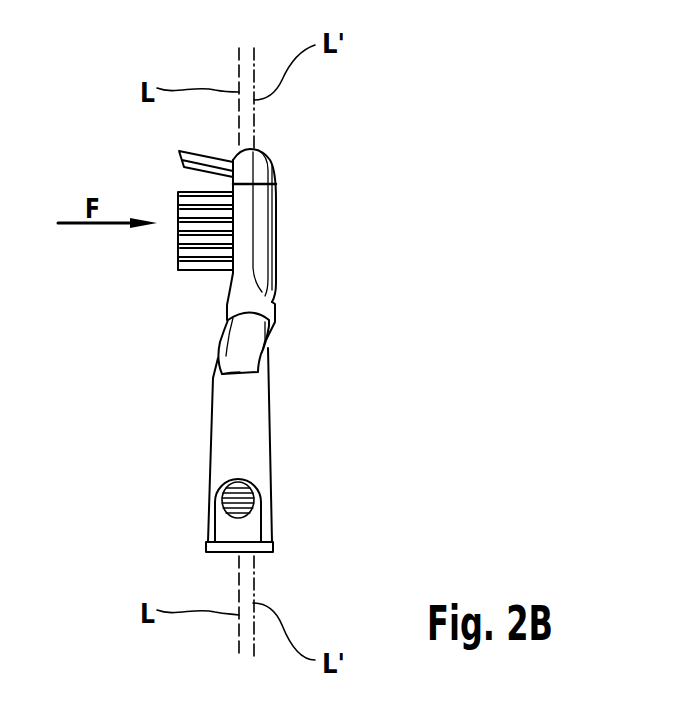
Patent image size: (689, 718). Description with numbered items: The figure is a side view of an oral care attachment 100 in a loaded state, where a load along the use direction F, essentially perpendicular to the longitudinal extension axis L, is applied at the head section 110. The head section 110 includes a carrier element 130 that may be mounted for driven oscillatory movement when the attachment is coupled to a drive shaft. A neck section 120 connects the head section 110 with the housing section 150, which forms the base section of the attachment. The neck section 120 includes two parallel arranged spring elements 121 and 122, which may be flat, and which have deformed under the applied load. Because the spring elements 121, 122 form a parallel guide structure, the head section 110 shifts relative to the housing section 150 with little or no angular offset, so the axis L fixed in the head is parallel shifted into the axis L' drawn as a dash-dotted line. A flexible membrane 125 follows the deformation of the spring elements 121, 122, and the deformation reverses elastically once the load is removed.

The oral care attachment 100 is at (277, 305).
The head section 110 is at (315, 224).
The carrier element 130 is at (280, 235).
The neck section 120 is at (277, 341).
The spring element 121 is at (265, 346).
The spring element 122 is at (226, 343).
The flexible membrane 125 is at (237, 365).
The housing section 150 is at (308, 476).